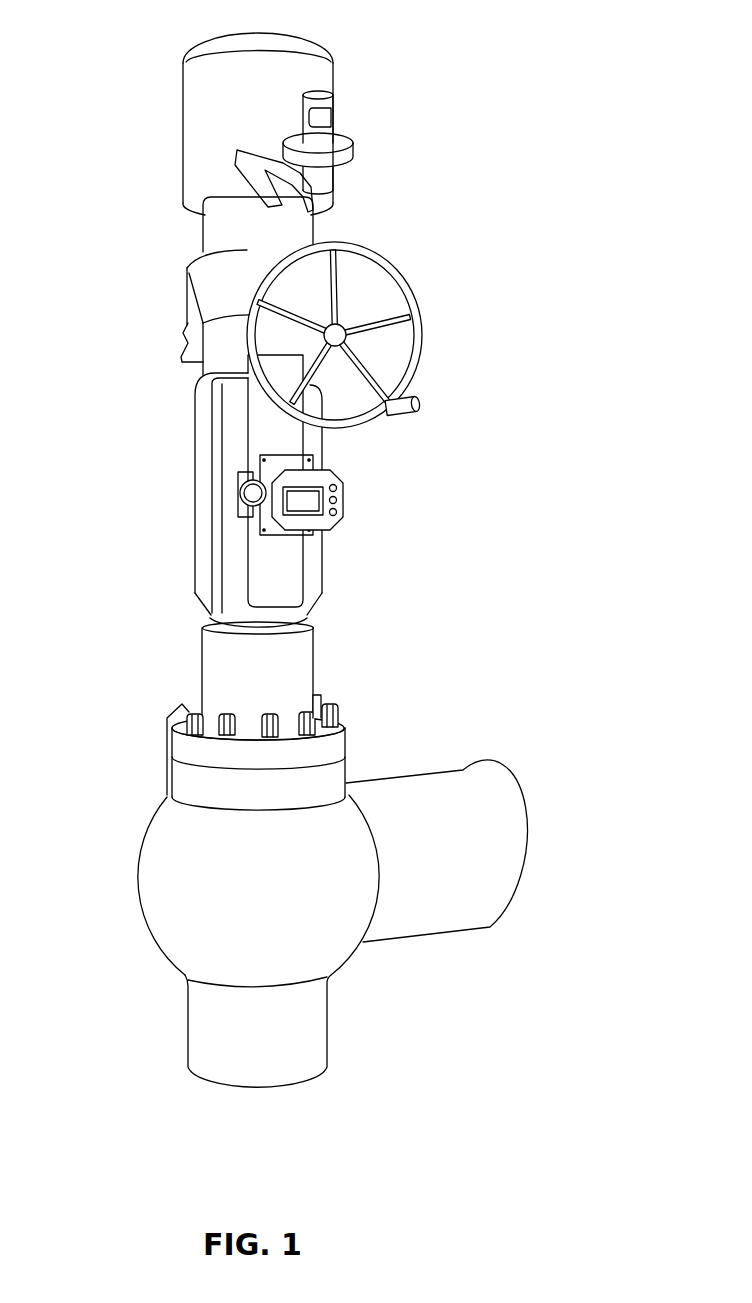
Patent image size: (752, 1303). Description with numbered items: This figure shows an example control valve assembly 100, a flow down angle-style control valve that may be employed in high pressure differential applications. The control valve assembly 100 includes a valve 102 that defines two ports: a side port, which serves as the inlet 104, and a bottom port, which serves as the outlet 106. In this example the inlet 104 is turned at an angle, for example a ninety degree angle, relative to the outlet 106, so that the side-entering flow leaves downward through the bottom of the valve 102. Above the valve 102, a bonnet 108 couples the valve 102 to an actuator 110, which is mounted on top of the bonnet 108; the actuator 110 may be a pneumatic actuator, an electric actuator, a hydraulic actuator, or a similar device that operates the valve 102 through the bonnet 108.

The control valve assembly 100 is at (435, 52).
The valve 102 is at (170, 882).
The inlet 104 is at (497, 862).
The outlet 106 is at (290, 1087).
The bonnet 108 is at (212, 665).
The actuator 110 is at (195, 163).